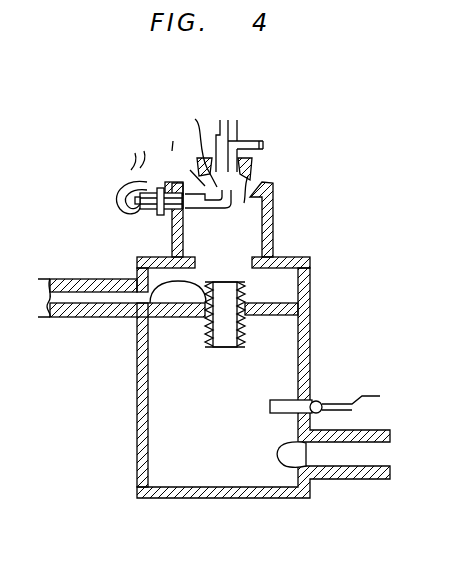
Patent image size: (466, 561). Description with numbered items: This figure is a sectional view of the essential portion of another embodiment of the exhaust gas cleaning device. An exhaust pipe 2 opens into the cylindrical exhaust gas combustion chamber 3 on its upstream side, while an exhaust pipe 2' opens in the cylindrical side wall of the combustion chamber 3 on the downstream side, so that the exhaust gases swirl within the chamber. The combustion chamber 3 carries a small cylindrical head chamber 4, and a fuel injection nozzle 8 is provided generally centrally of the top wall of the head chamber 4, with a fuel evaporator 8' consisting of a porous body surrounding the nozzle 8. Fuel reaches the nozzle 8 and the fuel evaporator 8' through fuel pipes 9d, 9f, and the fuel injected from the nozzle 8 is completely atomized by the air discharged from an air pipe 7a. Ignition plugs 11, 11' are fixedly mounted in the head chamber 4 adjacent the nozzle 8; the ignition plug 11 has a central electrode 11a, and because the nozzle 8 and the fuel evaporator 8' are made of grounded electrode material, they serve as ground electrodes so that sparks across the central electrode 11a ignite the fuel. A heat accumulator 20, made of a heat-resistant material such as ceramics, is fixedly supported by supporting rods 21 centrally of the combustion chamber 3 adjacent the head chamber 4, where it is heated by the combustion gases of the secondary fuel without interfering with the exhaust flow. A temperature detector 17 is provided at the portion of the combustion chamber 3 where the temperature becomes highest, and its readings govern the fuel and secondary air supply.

The exhaust pipe 2 is at (116, 317).
The exhaust pipe 2' is at (327, 480).
The exhaust gas combustion chamber 3 is at (137, 426).
The head chamber 4 is at (172, 244).
The air pipe 7a is at (263, 146).
The fuel injection nozzle 8 is at (223, 196).
The fuel evaporator 8' is at (274, 168).
The fuel pipe 9d is at (237, 133).
The fuel pipe 9f is at (193, 140).
The ignition plug 11 is at (138, 209).
The ignition plug 11' is at (131, 177).
The central electrode 11a is at (222, 180).
The temperature detector 17 is at (320, 398).
The heat accumulator 20 is at (246, 289).
The supporting rods 21 is at (180, 314).